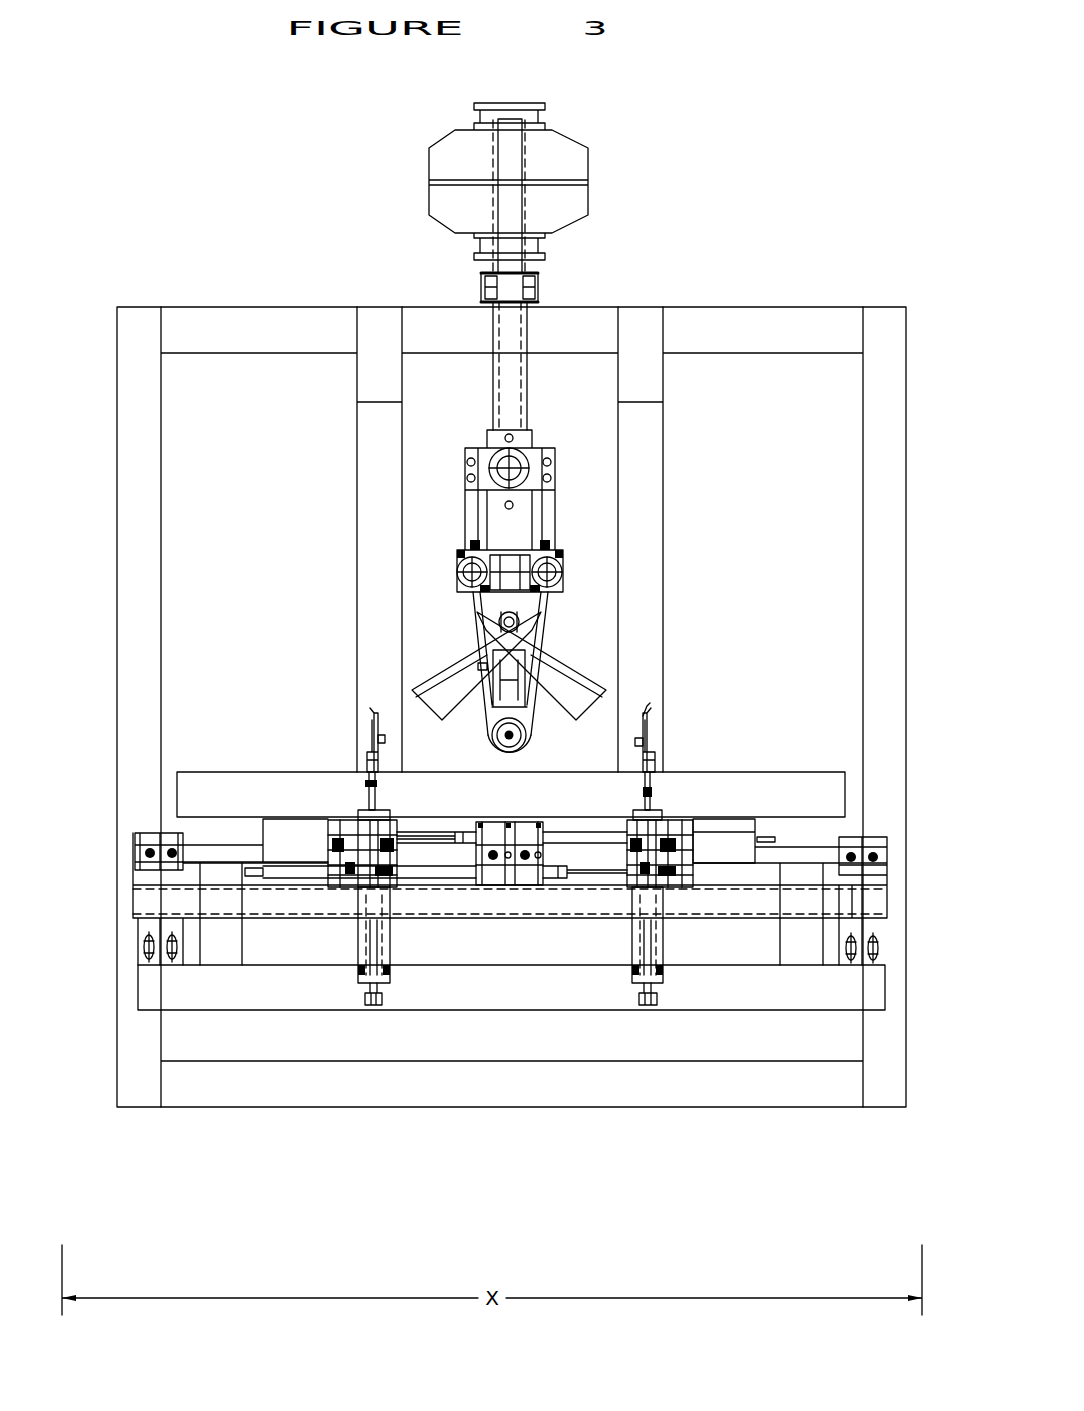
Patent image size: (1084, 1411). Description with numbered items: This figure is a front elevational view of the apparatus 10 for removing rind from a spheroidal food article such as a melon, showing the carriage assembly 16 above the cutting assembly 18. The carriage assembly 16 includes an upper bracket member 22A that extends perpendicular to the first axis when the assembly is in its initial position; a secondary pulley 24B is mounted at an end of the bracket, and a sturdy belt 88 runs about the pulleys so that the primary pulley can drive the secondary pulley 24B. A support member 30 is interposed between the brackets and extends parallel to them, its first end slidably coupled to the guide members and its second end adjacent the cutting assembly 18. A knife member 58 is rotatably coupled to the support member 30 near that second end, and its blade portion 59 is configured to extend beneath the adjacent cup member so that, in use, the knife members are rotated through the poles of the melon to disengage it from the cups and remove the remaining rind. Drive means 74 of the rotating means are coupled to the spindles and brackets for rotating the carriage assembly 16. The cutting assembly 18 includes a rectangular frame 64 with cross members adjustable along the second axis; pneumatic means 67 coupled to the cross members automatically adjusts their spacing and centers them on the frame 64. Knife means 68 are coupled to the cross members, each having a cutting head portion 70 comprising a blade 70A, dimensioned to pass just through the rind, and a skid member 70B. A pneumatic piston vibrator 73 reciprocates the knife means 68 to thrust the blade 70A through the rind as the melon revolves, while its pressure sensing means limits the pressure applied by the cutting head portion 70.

The apparatus 10 is at (293, 253).
The carriage assembly 16 is at (580, 510).
The cutting assembly 18 is at (510, 1035).
The upper bracket member 22A is at (475, 612).
The secondary pulley 24B is at (515, 753).
The support member 30 is at (543, 617).
The knife member 58 is at (470, 645).
The blade portion 59 is at (447, 688).
The rectangular frame 64 is at (708, 1012).
The pneumatic means 67 is at (563, 830).
The knife means 68 is at (377, 802).
The cutting head portion 70 is at (368, 757).
The blade 70A is at (643, 737).
The skid member 70B is at (645, 720).
The pneumatic piston vibrator 73 is at (362, 955).
The drive means 74 is at (390, 957).
The belt 88 is at (490, 708).